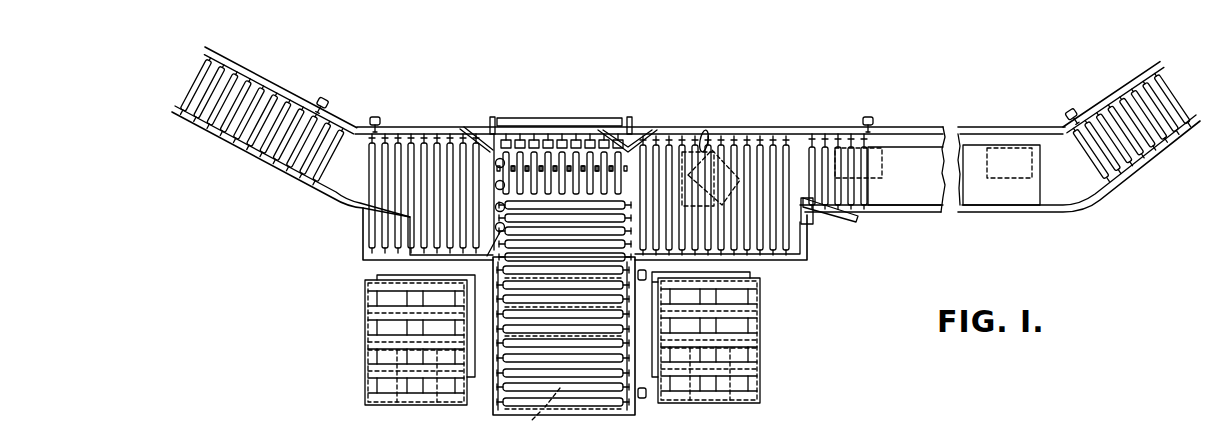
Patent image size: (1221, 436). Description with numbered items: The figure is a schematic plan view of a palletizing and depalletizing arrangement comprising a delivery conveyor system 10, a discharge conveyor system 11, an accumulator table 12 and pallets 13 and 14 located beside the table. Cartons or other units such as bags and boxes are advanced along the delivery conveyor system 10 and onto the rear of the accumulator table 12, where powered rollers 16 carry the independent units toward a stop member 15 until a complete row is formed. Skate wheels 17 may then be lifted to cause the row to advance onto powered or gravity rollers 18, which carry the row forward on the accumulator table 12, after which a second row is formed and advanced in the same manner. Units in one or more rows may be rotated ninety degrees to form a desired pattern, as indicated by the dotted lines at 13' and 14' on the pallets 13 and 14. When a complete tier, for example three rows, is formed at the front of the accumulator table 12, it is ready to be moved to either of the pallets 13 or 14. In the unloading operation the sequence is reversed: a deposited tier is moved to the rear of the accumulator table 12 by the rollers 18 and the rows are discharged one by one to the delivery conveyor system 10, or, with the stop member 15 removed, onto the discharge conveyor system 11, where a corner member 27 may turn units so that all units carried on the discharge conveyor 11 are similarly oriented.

The delivery conveyor system 10 is at (953, 115).
The discharge conveyor system 11 is at (348, 108).
The accumulator table 12 is at (559, 115).
The pallet 13 is at (738, 337).
The rotated unit pattern on pallet 13' is at (745, 374).
The pallet 14 is at (387, 340).
The rotated unit pattern on pallet 14' is at (391, 388).
The stop member 15 is at (489, 150).
The powered rollers 16 is at (588, 148).
The skate wheels 17 is at (626, 148).
The powered or gravity rollers 18 is at (623, 203).
The corner member 27 is at (409, 219).